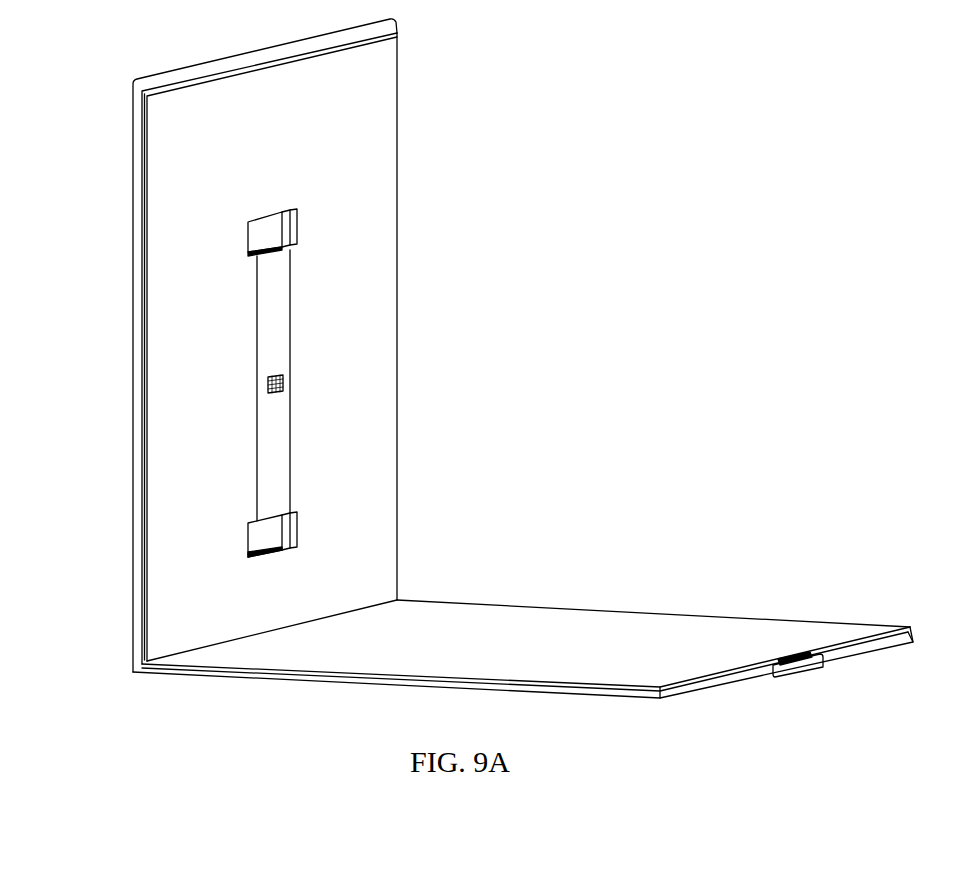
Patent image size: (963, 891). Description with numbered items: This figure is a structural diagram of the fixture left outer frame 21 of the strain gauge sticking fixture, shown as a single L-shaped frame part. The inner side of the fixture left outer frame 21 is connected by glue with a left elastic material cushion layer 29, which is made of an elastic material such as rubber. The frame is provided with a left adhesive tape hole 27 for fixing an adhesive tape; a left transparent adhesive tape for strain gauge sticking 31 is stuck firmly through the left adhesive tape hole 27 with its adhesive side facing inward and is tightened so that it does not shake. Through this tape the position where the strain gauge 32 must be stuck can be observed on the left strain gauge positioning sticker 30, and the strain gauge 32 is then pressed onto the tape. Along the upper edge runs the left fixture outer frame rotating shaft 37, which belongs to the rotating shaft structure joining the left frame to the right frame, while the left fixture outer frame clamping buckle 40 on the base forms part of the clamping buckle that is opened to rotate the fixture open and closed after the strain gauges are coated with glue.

The left fixture outer frame rotating shaft 37 is at (130, 83).
The fixture left outer frame 21 is at (138, 233).
The left elastic material cushion layer 29 is at (138, 288).
The left strain gauge positioning sticker 30 is at (147, 345).
The left transparent adhesive tape for strain gauge sticking 31 is at (272, 459).
The strain gauge 32 is at (283, 388).
The left adhesive tape hole 27 is at (272, 536).
The left fixture outer frame clamping buckle 40 is at (790, 662).